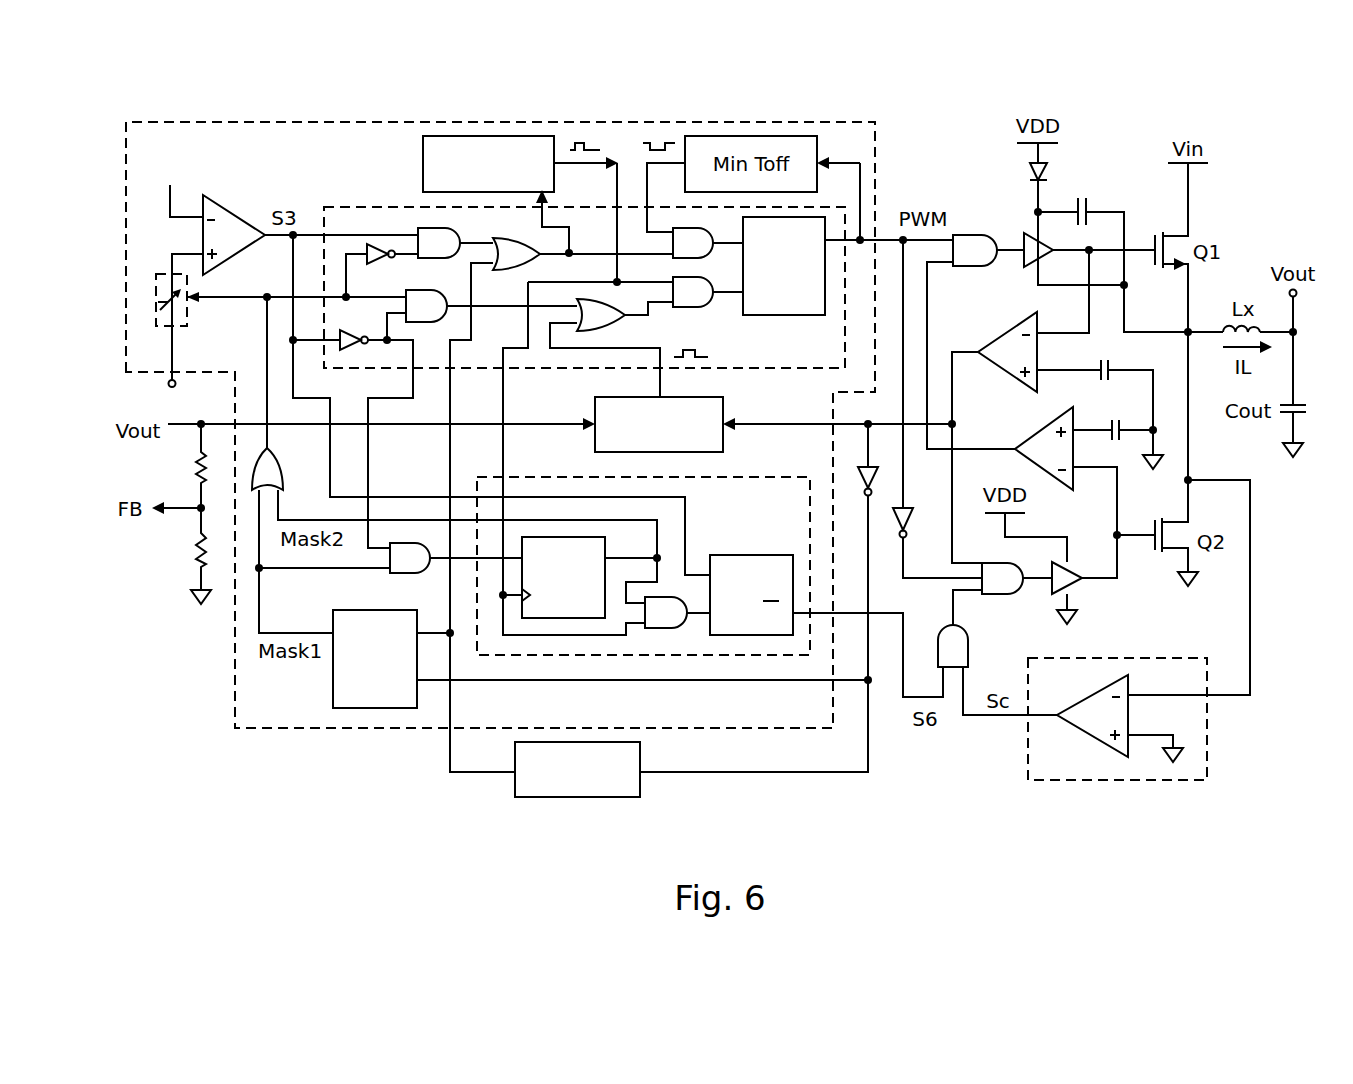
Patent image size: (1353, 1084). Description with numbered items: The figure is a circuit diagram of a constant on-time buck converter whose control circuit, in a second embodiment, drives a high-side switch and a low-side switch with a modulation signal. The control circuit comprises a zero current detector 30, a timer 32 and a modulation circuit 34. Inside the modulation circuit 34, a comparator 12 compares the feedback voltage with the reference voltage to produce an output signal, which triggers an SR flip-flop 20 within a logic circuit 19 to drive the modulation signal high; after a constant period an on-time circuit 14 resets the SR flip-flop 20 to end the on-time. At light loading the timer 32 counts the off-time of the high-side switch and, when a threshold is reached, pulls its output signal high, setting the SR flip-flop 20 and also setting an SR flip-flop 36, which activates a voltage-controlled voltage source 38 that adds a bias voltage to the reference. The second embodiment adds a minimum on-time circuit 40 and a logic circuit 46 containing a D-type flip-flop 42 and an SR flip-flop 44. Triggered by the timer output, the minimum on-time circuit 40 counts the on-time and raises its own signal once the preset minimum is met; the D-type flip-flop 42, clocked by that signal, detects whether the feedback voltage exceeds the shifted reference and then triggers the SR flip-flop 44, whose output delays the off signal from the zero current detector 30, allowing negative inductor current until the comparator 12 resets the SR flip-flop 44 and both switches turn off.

The comparator 12 is at (232, 213).
The on-time circuit 14 is at (727, 412).
The logic circuit 19 is at (346, 207).
The SR flip-flop 20 is at (785, 315).
The zero current detector 30 is at (1207, 718).
The timer 32 is at (575, 742).
The modulation circuit 34 is at (876, 178).
The SR flip-flop 36 is at (333, 675).
The voltage-controlled voltage source 38 is at (188, 327).
The minimum on-time circuit 40 is at (423, 163).
The D-type flip-flop 42 is at (562, 618).
The SR flip-flop 44 is at (754, 555).
The logic circuit 46 is at (578, 477).